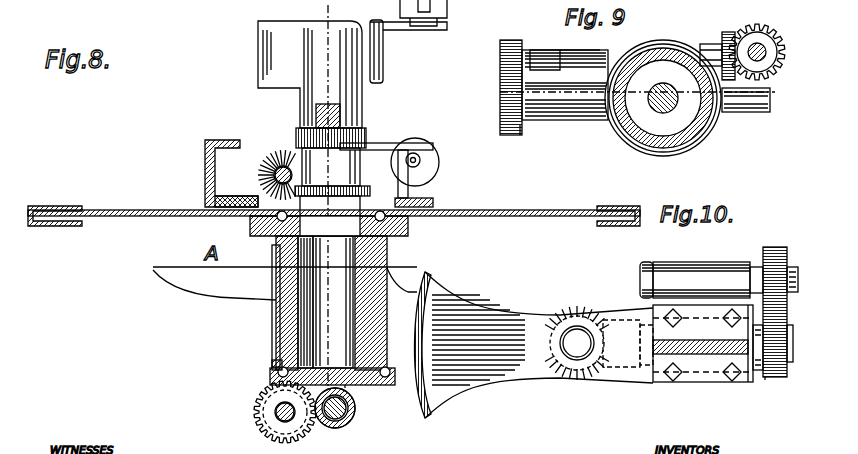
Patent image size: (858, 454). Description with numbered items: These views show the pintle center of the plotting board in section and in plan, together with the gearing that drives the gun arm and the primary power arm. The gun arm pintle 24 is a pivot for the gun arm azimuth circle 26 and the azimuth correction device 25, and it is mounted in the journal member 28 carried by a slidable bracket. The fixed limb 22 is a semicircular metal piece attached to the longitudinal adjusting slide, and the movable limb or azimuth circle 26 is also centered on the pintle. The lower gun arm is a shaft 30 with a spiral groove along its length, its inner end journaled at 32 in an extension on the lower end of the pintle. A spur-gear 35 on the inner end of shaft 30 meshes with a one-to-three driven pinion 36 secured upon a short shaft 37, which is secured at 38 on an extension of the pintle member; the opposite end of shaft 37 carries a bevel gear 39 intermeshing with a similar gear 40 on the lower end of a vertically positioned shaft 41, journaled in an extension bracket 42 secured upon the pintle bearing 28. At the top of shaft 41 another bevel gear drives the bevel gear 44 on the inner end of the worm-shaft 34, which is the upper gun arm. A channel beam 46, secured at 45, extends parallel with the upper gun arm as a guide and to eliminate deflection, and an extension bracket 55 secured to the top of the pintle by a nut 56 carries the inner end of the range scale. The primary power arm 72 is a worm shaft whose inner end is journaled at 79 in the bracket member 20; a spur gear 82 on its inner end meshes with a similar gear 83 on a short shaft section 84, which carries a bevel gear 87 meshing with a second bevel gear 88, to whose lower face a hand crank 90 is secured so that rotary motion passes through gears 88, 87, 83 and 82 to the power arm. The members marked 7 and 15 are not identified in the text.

In FIG. 8, the extension bracket 55 is at (310, 74).
In FIG. 8, the nut 56 is at (345, 118).
In FIG. 8, the hand crank 90 is at (380, 65).
In FIG. 8, the bevel gear 87 is at (452, 0).
In FIG. 8, the bevel gear 44 is at (314, 169).
In FIG. 8, the worm-shaft 34 is at (257, 176).
In FIG. 9, the worm-shaft 34 is at (663, 98).
In FIG. 8, the channel beam 46 is at (231, 162).
In FIG. 8, the securing point of channel beam 45 is at (216, 198).
In FIG. 8, the gun arm azimuth circle 26 is at (334, 202).
In FIG. 8, the fixed limb 22 is at (334, 207).
In FIG. 8, the azimuth correction device 25 is at (425, 147).
In FIG. 8, the extension bracket 42 is at (273, 290).
In FIG. 8, the gun arm pintle 24 is at (333, 302).
In FIG. 8, the bevel gear 40 is at (273, 370).
In FIG. 9, the bevel gear 40 is at (765, 36).
In FIG. 8, the short shaft 37 is at (283, 430).
In FIG. 9, the short shaft 37 is at (552, 52).
In FIG. 8, the bevel gear 39 is at (275, 412).
In FIG. 9, the bevel gear 39 is at (716, 44).
In FIG. 8, the journal of lower gun arm 32 is at (352, 413).
In FIG. 9, the journal of lower gun arm 32 is at (565, 85).
In FIG. 8, the shaft 30 is at (341, 426).
In FIG. 9, the shaft 30 is at (752, 110).
In FIG. 8, the horn bell 7 is at (334, 430).
In FIG. 10, the horn bell 7 is at (428, 345).
In FIG. 9, the driven pinion 36 is at (500, 87).
In FIG. 9, the securing point of short shaft 38 is at (583, 38).
In FIG. 9, the spur-gear 35 is at (522, 132).
In FIG. 9, the journal member 28 is at (626, 140).
In FIG. 9, the vertically positioned shaft 41 is at (762, 60).
In FIG. 10, the horn 15 is at (497, 322).
In FIG. 10, the bevel gear 88 is at (577, 332).
In FIG. 10, the short shaft section 84 is at (622, 325).
In FIG. 10, the bracket member 20 is at (660, 378).
In FIG. 10, the journal of power arm 79 is at (701, 280).
In FIG. 10, the spur gear 82 is at (775, 262).
In FIG. 10, the primary power arm 72 is at (768, 270).
In FIG. 10, the spur gear 83 is at (772, 378).